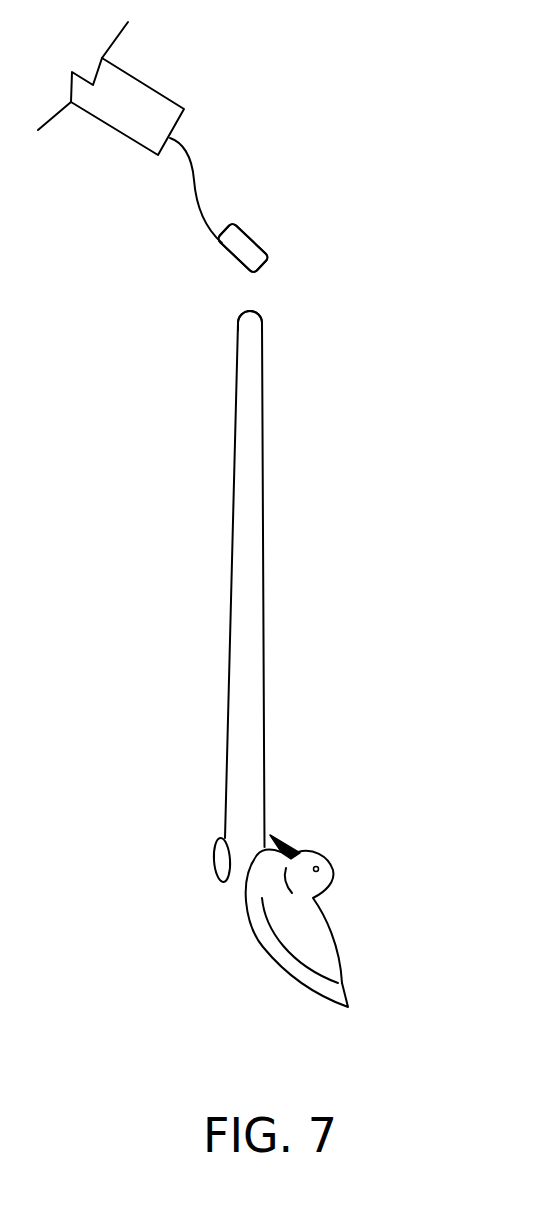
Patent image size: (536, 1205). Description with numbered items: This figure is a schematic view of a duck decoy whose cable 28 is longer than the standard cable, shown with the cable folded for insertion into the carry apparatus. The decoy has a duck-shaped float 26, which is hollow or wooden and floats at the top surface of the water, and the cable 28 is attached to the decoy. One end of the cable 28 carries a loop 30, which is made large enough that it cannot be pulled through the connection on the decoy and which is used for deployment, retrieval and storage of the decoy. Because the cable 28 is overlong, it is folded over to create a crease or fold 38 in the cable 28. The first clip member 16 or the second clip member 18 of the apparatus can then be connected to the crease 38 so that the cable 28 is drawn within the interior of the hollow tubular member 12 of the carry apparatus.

The hollow tubular member 12 is at (151, 90).
The second clip member 18 is at (255, 233).
The first clip member 16 is at (243, 248).
The crease or fold 38 is at (255, 312).
The cable 28 is at (262, 542).
The loop 30 is at (212, 868).
The duck-shaped float 26 is at (350, 857).